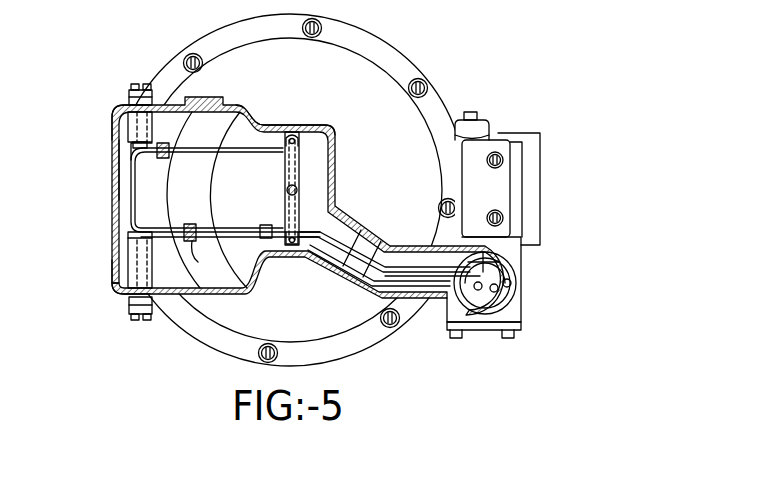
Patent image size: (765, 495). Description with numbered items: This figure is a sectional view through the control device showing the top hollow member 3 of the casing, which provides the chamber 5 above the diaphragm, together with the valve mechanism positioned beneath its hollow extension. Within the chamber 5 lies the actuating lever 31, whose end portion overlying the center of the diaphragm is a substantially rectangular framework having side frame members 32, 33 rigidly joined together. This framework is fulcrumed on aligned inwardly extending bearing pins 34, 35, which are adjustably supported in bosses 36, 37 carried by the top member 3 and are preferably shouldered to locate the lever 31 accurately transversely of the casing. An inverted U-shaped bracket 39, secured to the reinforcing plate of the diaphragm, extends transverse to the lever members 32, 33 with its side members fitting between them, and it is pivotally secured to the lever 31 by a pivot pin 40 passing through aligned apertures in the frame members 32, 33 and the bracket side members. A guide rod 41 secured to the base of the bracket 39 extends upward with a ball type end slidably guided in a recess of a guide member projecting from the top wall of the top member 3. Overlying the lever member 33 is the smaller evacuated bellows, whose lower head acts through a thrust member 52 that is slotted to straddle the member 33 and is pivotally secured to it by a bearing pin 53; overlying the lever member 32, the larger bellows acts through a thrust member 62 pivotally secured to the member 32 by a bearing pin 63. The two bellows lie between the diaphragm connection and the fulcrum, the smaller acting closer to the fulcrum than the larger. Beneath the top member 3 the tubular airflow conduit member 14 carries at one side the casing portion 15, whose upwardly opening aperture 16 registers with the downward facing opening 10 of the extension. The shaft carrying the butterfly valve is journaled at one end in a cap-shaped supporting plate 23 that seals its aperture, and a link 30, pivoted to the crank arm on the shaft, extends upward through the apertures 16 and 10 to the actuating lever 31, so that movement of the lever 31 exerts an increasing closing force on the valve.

The top hollow member 3 is at (319, 124).
The chamber 5 is at (333, 164).
The downward facing opening 10 is at (520, 288).
The airflow conduit member 14 is at (502, 134).
The casing portion 15 is at (522, 311).
The upwardly opening aperture 16 is at (456, 315).
The supporting plate 23 is at (474, 118).
The link 30 is at (488, 331).
The actuating lever 31 is at (343, 240).
The side frame member 32 is at (220, 233).
The side frame member 33 is at (201, 147).
The bearing pin 34 is at (128, 219).
The bearing pin 35 is at (128, 162).
The boss 36 is at (126, 270).
The boss 37 is at (126, 131).
The inverted U-shaped bracket 39 is at (302, 208).
The pivot pin 40 is at (297, 163).
The guide rod 41 is at (298, 190).
The thrust member 52 is at (166, 146).
The bearing pin 53 is at (162, 157).
The thrust member 62 is at (190, 223).
The bearing pin 63 is at (197, 261).